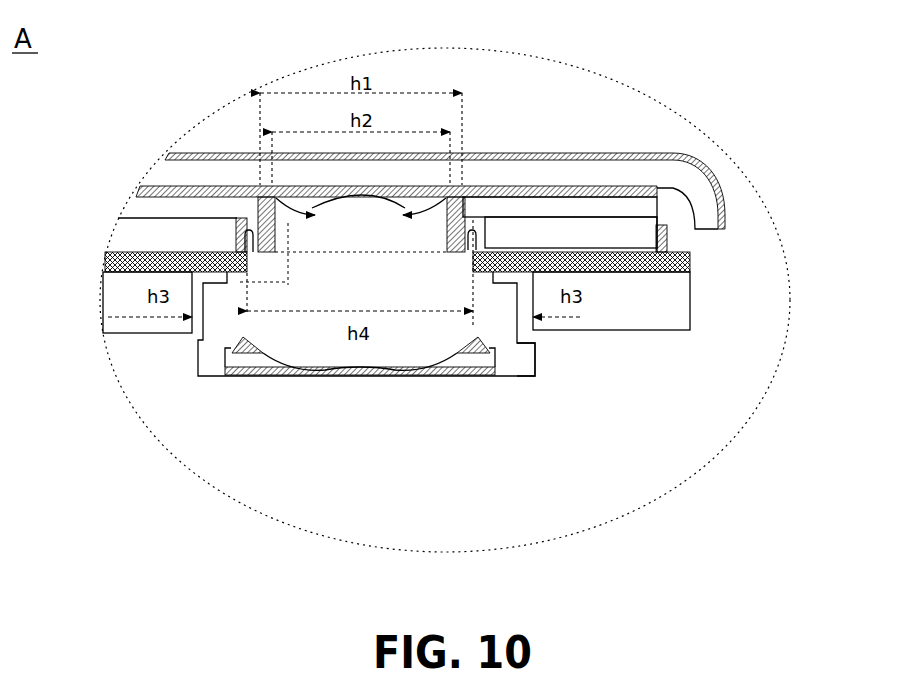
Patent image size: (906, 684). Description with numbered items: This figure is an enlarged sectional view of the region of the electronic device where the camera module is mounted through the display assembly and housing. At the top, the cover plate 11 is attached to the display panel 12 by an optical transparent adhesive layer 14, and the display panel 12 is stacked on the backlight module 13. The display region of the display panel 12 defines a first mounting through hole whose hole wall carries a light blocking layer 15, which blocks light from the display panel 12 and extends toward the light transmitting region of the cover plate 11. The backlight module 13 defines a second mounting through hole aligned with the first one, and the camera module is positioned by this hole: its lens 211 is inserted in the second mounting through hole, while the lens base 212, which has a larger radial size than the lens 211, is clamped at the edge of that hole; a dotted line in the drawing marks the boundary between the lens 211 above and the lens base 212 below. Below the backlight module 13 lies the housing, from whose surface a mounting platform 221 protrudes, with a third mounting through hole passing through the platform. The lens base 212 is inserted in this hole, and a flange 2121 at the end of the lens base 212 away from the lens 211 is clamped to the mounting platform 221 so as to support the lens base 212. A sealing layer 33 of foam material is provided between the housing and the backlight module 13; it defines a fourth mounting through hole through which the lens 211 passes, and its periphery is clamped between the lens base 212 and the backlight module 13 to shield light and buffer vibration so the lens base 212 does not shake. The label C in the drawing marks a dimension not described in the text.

The optical transparent adhesive layer 14 is at (520, 153).
The cover plate 11 is at (612, 183).
The light blocking layer 15 is at (257, 212).
The gap C is at (237, 240).
The sealing layer 33 is at (668, 242).
The display panel 12 is at (623, 208).
The backlight module 13 is at (643, 233).
The lens 211 is at (428, 223).
The lens base 212 is at (433, 273).
The mounting platform 221 is at (125, 305).
The flange 2121 is at (518, 362).